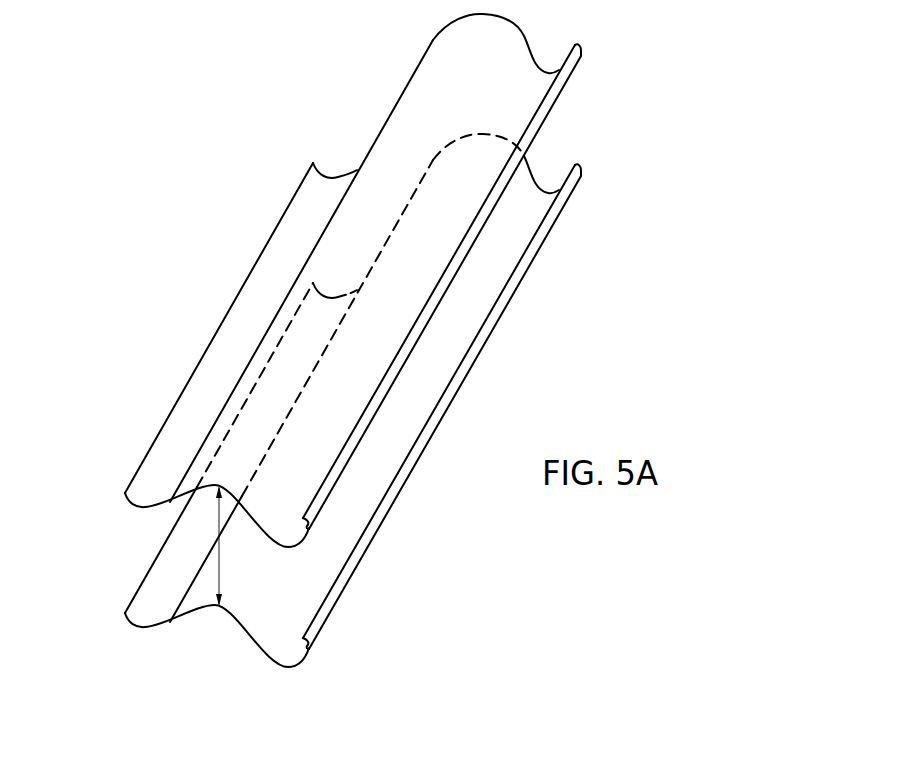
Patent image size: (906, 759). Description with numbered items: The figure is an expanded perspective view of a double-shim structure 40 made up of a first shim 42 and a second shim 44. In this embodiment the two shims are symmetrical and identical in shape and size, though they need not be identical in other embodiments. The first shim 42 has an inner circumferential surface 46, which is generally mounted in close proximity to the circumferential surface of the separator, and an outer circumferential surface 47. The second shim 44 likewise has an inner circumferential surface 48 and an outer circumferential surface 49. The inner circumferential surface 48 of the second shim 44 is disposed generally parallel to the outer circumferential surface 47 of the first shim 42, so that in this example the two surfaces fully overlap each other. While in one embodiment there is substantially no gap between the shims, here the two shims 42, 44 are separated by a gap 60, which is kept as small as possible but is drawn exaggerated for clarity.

The double-shim structure 40 is at (152, 68).
The first shim 42 is at (532, 172).
The second shim 44 is at (532, 48).
The inner circumferential surface 46 is at (510, 314).
The outer circumferential surface 47 is at (402, 458).
The inner circumferential surface 48 is at (452, 291).
The outer circumferential surface 49 is at (215, 340).
The gap 60 is at (221, 547).